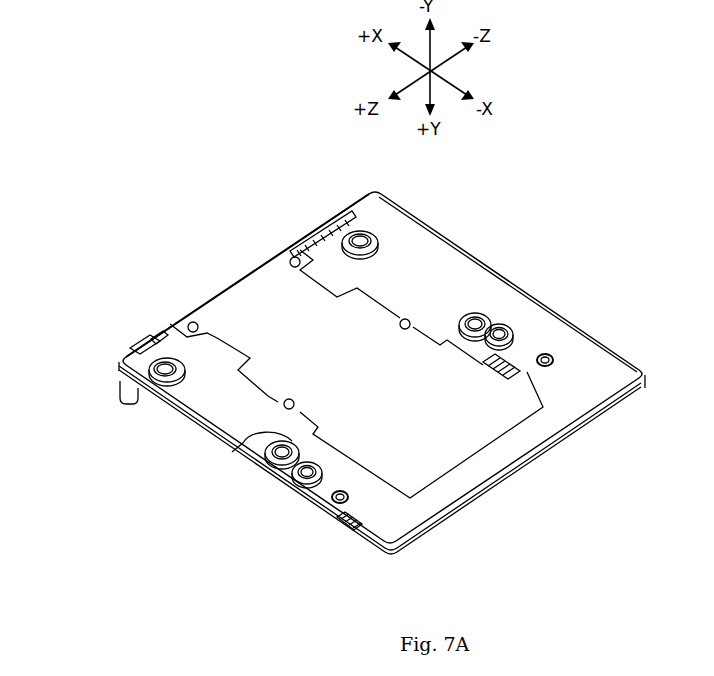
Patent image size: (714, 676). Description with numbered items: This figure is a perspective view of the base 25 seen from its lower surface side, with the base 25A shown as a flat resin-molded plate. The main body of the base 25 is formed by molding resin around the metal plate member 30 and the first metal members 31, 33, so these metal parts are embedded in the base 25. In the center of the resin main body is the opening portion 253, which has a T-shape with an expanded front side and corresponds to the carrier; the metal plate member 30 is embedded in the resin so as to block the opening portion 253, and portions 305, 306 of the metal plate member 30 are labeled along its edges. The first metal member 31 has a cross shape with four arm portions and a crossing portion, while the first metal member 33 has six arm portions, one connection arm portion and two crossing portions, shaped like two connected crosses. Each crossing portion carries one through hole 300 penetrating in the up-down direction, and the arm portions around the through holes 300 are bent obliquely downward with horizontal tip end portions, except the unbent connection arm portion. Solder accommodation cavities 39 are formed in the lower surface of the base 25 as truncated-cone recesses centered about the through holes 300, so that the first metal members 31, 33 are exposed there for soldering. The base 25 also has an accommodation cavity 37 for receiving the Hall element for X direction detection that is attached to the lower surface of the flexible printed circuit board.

The frame 25A is at (413, 260).
The base 25 is at (500, 492).
The opening portion 253 is at (483, 440).
The metal plate member 30 is at (266, 392).
The plate first side portion 305 is at (260, 292).
The plate second side portion 306 is at (357, 535).
The through hole 300 is at (370, 233).
The solder accommodation cavity 39 is at (360, 232).
The first metal member 31 is at (148, 393).
The first metal member 33 is at (268, 462).
The accommodation cavity 37 is at (537, 372).